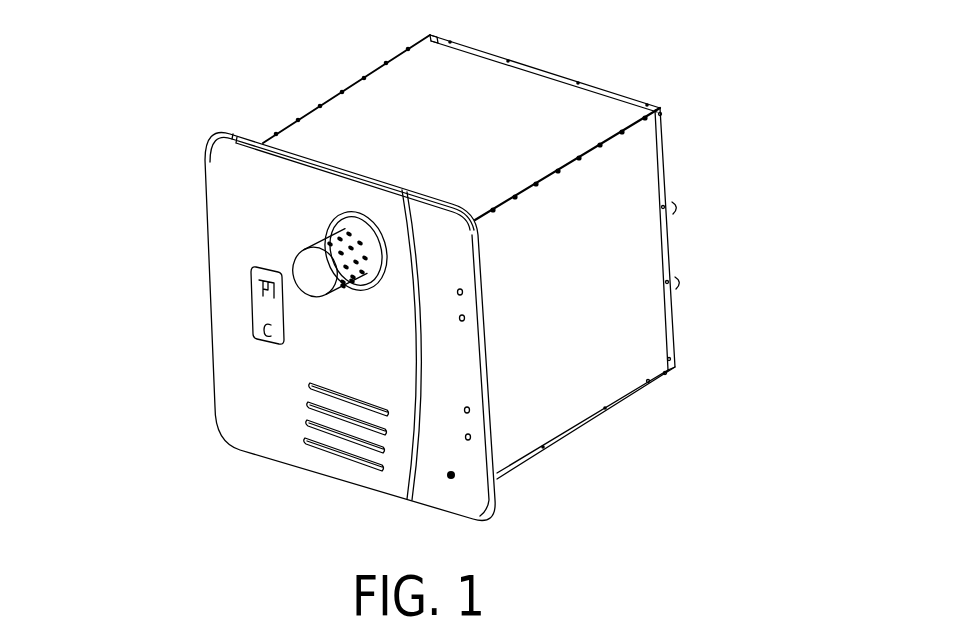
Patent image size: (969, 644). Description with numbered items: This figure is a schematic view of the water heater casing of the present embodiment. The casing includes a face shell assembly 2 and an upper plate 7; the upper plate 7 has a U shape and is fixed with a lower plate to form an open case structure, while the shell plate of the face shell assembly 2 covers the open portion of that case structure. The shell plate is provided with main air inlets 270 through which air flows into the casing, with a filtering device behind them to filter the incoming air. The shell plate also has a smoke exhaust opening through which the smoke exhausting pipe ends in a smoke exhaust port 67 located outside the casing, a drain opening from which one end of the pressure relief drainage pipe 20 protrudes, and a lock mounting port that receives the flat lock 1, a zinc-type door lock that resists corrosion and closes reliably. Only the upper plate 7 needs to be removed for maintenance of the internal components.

The upper plate 7 is at (493, 121).
The face shell assembly 2 is at (253, 380).
The smoke exhaust port 67 is at (312, 270).
The flat lock 1 is at (263, 308).
The main air inlet 270 is at (318, 428).
The pressure relief drainage pipe 20 is at (455, 476).